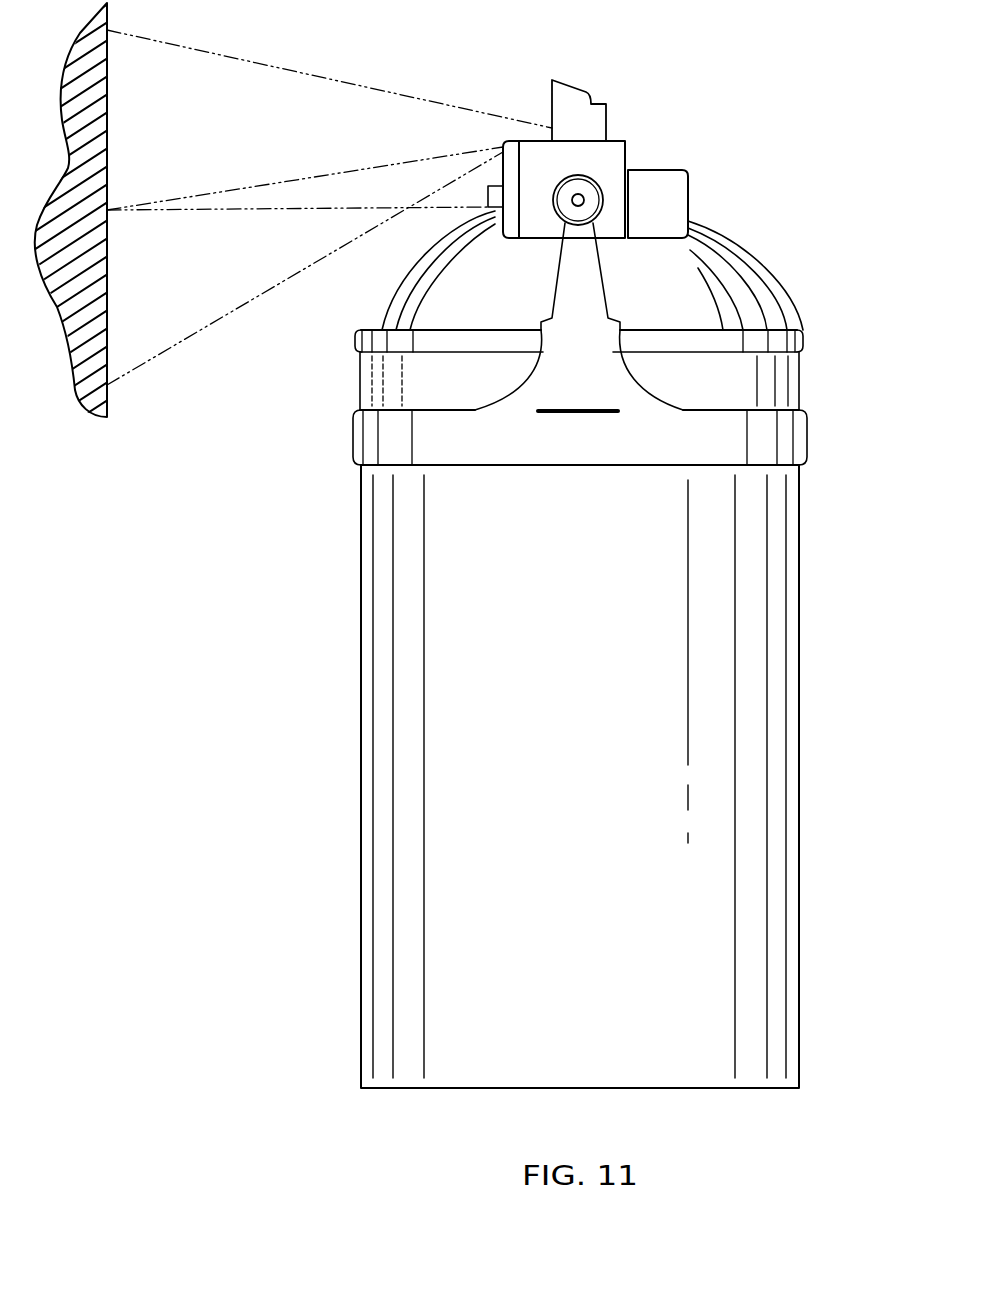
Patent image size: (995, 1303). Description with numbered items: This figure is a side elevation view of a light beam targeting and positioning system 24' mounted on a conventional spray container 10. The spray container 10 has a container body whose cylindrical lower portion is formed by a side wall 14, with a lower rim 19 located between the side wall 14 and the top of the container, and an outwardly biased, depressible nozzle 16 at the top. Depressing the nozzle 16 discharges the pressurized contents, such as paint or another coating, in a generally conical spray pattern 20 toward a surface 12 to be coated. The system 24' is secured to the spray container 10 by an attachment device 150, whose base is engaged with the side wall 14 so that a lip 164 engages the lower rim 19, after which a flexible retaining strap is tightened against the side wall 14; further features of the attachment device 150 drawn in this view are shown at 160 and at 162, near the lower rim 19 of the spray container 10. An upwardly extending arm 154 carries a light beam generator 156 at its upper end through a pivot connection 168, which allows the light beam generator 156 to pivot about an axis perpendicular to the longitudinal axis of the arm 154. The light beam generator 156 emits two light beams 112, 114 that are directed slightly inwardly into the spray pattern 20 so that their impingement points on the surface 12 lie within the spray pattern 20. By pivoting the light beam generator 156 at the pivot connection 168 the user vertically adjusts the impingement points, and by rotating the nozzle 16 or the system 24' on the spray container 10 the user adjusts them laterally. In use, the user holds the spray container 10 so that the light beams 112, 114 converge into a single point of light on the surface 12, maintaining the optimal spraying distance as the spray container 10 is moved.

The spray container 10 is at (826, 503).
The surface 12 is at (110, 162).
The side wall 14 is at (800, 663).
The nozzle 16 is at (588, 92).
The lower rim 19 is at (808, 337).
The spray pattern 20 is at (278, 62).
The light beam targeting and positioning system 24' is at (645, 172).
The light beam 112 is at (380, 177).
The light beam 114 is at (322, 210).
The attachment device 150 is at (410, 486).
The arm 154 is at (553, 282).
The light beam generator 156 is at (699, 197).
The slot 160 is at (583, 435).
The bead 162 is at (372, 443).
The lip 164 is at (628, 323).
The pivot connection 168 is at (596, 180).